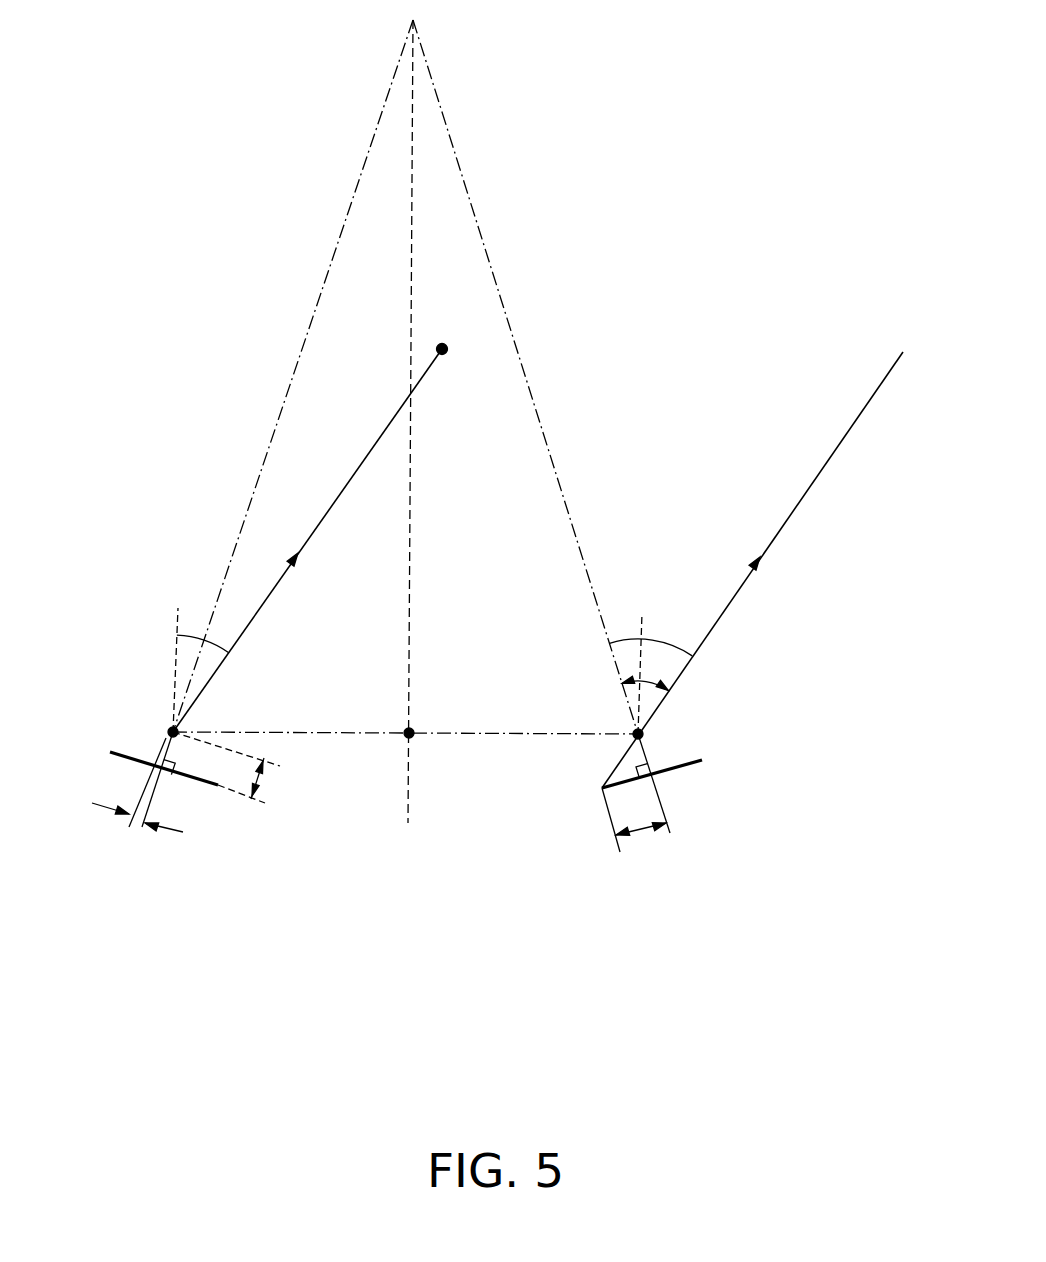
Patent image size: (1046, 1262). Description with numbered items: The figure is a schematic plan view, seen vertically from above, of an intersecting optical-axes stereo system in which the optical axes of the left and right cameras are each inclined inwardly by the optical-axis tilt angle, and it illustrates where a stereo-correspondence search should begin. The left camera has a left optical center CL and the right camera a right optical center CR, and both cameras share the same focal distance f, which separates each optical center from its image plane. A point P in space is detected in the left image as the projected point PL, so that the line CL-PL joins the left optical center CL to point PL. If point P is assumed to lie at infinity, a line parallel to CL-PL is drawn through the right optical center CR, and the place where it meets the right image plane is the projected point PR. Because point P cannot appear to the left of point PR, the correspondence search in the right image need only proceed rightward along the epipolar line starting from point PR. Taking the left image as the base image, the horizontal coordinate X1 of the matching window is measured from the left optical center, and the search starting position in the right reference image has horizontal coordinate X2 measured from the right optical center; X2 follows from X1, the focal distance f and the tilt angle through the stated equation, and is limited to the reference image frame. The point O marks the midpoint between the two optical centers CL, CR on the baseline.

The left optical center CL is at (197, 721).
The right optical center CR is at (618, 722).
The origin / midpoint between camera centers O is at (420, 748).
The point in space P is at (450, 369).
The projected point in the left image PL is at (164, 758).
The projected point in the right image PR is at (636, 774).
The x-coordinate of matching window in the base image X1 is at (137, 785).
The x-coordinate of search starting position in the reference image X2 is at (634, 820).
The focal distance f is at (227, 767).